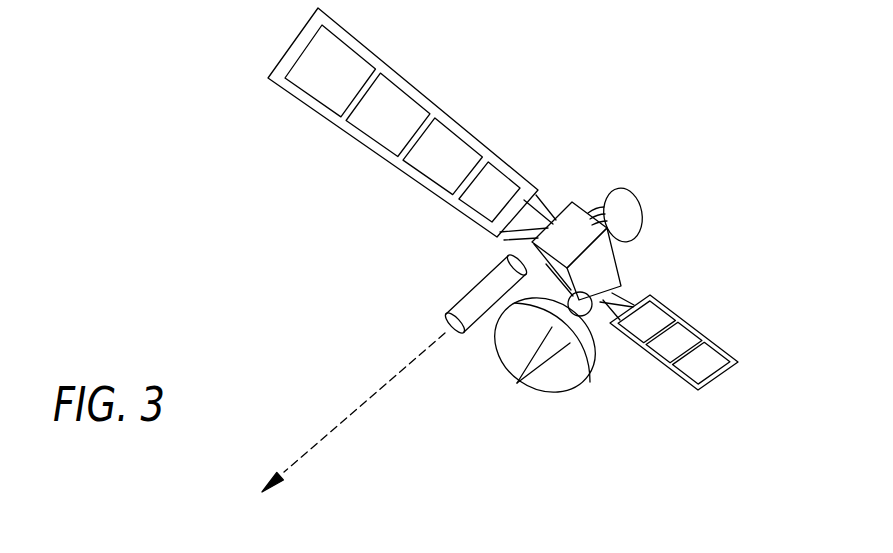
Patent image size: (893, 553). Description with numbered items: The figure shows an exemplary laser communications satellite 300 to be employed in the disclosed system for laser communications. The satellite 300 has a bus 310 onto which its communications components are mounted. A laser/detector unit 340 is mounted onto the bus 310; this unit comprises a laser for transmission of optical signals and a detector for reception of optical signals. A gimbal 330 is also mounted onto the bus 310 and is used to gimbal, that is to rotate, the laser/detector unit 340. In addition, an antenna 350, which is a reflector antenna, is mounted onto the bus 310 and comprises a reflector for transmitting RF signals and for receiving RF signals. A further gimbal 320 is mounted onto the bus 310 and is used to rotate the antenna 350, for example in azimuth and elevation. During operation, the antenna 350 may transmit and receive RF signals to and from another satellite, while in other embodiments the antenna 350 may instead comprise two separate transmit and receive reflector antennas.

The laser communications satellite 300 is at (243, 284).
The bus 310 is at (618, 278).
The gimbal 320 is at (597, 313).
The gimbal 330 is at (500, 238).
The laser/detector unit 340 is at (468, 288).
The antenna 350 is at (590, 383).